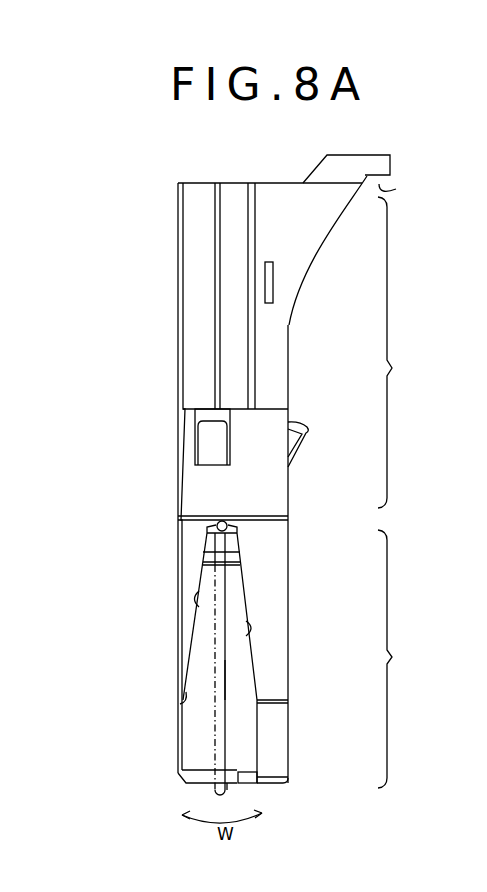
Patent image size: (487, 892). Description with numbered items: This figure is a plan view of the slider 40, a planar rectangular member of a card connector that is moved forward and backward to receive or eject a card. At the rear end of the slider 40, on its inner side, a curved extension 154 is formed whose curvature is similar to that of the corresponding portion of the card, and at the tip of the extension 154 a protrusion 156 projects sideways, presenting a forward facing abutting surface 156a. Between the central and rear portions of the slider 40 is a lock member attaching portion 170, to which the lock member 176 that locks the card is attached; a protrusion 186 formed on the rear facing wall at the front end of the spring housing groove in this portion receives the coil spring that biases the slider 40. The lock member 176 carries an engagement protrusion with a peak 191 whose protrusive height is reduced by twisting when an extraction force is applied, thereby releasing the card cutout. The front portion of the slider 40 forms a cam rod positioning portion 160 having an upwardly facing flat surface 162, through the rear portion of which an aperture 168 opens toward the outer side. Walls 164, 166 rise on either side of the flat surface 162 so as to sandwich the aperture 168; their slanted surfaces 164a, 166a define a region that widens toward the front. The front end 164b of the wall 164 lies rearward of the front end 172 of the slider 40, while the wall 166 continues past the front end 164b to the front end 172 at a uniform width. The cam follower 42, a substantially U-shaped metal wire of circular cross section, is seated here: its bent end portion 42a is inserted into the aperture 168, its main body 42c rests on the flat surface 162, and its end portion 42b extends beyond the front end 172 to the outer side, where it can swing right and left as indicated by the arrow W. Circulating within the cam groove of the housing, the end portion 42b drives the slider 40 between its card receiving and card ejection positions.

The slider 40 is at (420, 254).
The cam follower 42 is at (213, 646).
The bent end portion 42a is at (237, 533).
The end portion 42b is at (227, 795).
The main body 42c is at (227, 680).
The curved extension 154 is at (308, 245).
The protrusion 156 is at (373, 162).
The abutting surface 156a is at (398, 188).
The cam rod positioning portion 160 is at (407, 659).
The flat surface 162 is at (190, 733).
The wall 164 is at (200, 572).
The slanted surface 164a is at (202, 606).
The front end of wall 164b is at (175, 705).
The wall 166 is at (272, 580).
The slanted surface 166a is at (253, 632).
The aperture 168 is at (182, 522).
The lock member attaching portion 170 is at (405, 352).
The front end of slider 172 is at (273, 786).
The lock member 176 is at (302, 418).
The protrusion 186 is at (218, 420).
The peak 191 is at (307, 428).